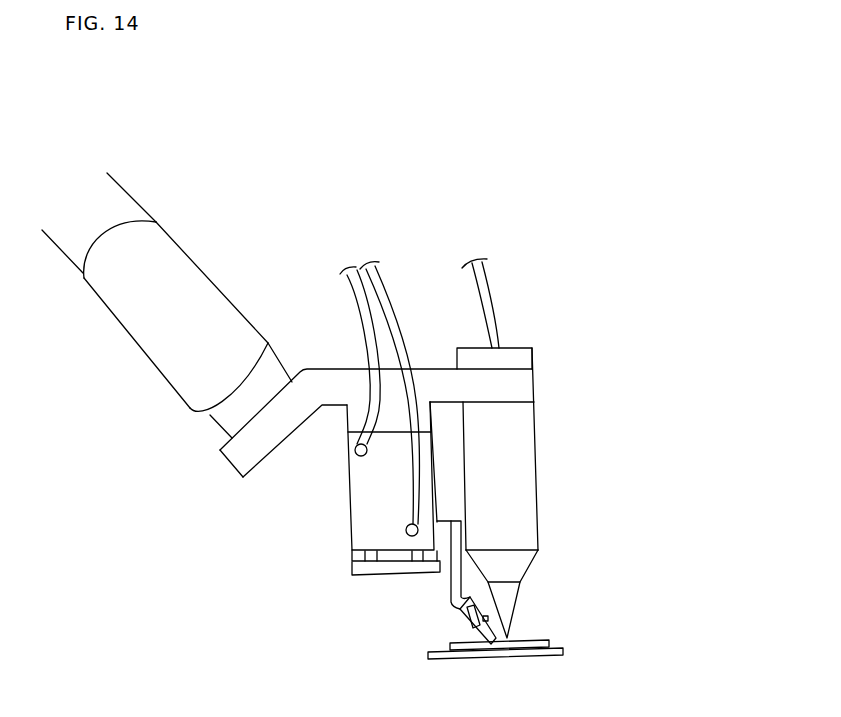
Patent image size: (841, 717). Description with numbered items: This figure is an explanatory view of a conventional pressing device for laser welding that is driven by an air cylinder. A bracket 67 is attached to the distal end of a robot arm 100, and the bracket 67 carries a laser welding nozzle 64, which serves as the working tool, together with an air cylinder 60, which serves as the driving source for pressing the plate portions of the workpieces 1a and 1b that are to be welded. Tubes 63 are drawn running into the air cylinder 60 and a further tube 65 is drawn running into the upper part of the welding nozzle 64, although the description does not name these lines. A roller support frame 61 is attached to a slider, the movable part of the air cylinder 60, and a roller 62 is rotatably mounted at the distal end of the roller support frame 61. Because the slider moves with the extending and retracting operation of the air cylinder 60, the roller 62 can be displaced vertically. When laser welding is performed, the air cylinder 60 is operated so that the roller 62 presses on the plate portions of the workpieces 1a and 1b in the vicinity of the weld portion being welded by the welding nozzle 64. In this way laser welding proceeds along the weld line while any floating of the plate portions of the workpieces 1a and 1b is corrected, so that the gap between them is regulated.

The robot arm 100 is at (191, 253).
The bracket 67 is at (236, 462).
The air cylinder 60 is at (353, 517).
The tubes 63 is at (385, 384).
The tube 65 is at (493, 305).
The laser welding nozzle 64 is at (536, 452).
The roller support frame 61 is at (440, 568).
The roller 62 is at (455, 608).
The workpiece 1b is at (546, 640).
The workpiece 1a is at (527, 659).